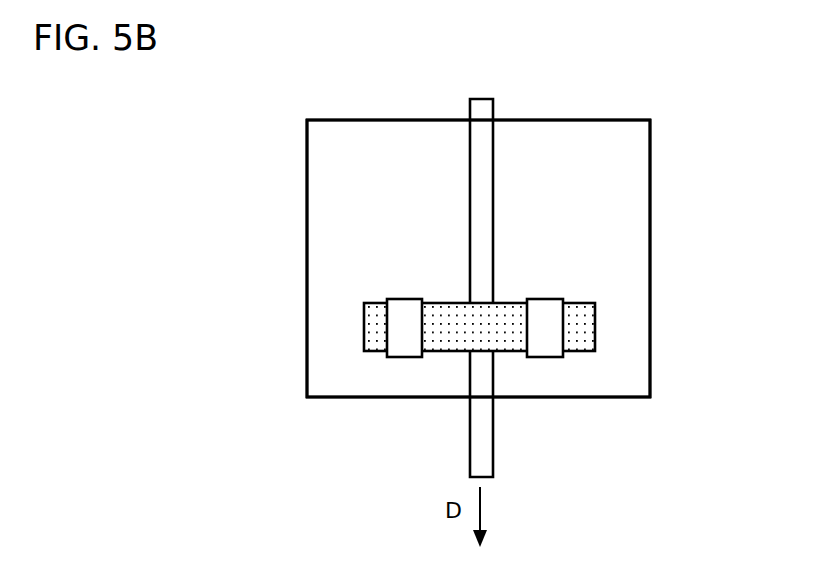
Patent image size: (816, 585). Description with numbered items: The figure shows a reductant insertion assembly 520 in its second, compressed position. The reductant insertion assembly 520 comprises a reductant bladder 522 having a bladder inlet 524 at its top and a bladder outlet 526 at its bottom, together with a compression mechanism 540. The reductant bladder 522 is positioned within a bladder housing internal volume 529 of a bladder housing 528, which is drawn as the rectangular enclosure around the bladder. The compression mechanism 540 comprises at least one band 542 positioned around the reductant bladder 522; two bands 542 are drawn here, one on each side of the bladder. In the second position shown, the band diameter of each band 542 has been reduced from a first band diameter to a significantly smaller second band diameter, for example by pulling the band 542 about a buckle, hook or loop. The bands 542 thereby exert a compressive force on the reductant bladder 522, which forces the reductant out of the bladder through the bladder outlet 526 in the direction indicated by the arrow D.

The reductant insertion assembly 520 is at (638, 103).
The reductant bladder 522 is at (583, 330).
The bladder inlet 524 is at (475, 110).
The bladder outlet 526 is at (480, 437).
The bladder housing 528 is at (650, 178).
The bladder housing internal volume 529 is at (640, 283).
The compression mechanism 540 is at (475, 316).
The band 542 is at (400, 328).